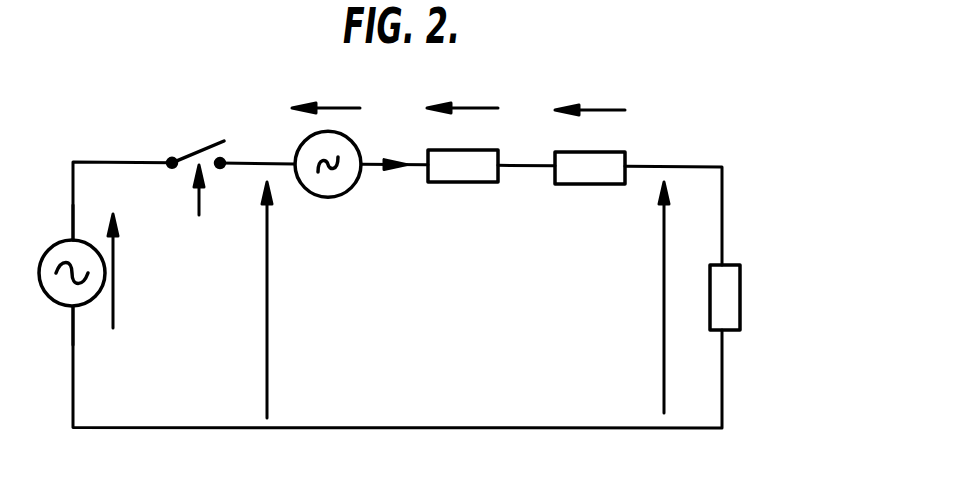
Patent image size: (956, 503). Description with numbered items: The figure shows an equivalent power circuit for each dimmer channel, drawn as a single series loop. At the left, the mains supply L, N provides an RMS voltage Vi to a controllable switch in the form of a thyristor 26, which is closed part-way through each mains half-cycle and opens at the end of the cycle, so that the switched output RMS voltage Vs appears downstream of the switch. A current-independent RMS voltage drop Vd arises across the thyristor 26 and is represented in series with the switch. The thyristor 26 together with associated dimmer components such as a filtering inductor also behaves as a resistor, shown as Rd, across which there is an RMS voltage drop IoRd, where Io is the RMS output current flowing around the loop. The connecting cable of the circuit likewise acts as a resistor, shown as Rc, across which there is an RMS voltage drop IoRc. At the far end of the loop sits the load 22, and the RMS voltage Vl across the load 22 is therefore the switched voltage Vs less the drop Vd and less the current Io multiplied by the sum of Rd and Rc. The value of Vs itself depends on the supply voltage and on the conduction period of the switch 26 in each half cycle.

The thyristor 26 is at (193, 143).
The load 22 is at (743, 286).
The resistor representing thyristor and dimmer components Rd is at (466, 172).
The resistor representing connecting cable Rc is at (588, 175).
The current-independent RMS voltage drop Vd is at (345, 106).
The RMS voltage Vi is at (115, 273).
The switched output RMS voltage Vs is at (269, 275).
The RMS voltage across the load Vl is at (661, 268).
The RMS output current Io is at (388, 191).
The RMS voltage drop across Rd IoRd is at (465, 106).
The RMS voltage drop across Rc IoRc is at (591, 86).
The mains line terminal L is at (57, 219).
The mains neutral terminal N is at (56, 330).